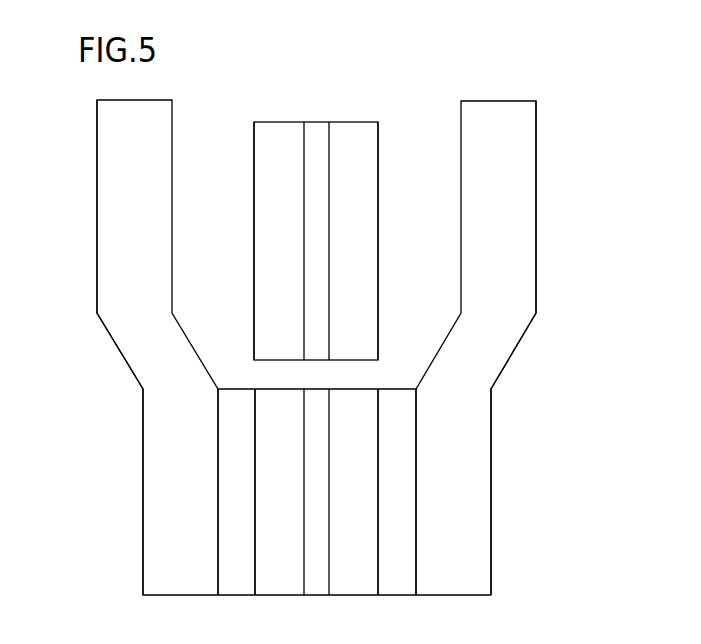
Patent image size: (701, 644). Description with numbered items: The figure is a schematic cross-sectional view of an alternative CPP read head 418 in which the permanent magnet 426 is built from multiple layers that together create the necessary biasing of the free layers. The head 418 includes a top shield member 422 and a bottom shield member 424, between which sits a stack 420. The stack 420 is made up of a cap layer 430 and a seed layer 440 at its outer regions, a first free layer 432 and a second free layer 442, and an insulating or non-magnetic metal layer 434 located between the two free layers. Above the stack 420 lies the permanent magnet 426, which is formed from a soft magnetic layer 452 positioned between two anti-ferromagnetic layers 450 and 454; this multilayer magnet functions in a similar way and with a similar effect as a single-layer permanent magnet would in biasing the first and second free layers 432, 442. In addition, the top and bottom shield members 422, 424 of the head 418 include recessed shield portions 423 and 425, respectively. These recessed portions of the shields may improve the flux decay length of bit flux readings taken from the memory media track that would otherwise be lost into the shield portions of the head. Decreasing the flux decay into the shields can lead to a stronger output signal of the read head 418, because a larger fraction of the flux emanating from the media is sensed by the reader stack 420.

The read head 418 is at (558, 86).
The stack 420 is at (418, 432).
The top shield member 422 is at (483, 511).
The recessed shield portion 423 is at (530, 193).
The bottom shield member 424 is at (155, 498).
The recessed shield portion 425 is at (108, 198).
The permanent magnet 426 is at (288, 120).
The cap layer 430 is at (395, 397).
The first free layer 432 is at (347, 587).
The insulating or non-magnetic metal layer 434 is at (318, 588).
The seed layer 440 is at (237, 398).
The second free layer 442 is at (287, 587).
The anti-ferromagnetic layer 450 is at (352, 127).
The soft magnetic layer 452 is at (316, 130).
The anti-ferromagnetic layer 454 is at (267, 127).